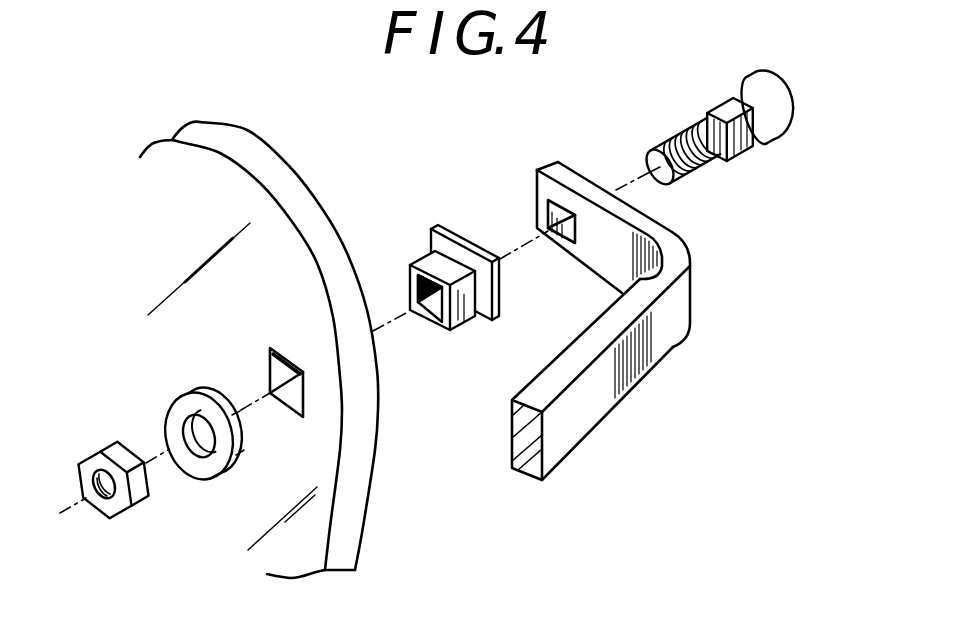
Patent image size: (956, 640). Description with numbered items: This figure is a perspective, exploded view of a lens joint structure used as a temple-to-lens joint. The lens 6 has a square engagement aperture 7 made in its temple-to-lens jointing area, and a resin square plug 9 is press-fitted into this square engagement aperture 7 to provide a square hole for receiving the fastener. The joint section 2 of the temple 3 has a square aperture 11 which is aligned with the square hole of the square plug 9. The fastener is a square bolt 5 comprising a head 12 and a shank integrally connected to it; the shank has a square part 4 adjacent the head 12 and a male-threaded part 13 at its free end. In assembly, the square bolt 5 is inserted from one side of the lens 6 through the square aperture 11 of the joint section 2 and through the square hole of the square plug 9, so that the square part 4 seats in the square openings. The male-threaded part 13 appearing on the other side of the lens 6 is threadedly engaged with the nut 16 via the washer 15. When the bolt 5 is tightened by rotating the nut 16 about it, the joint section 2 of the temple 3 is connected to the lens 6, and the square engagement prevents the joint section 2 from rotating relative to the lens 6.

The joint section 2 is at (601, 338).
The temple 3 is at (573, 440).
The square part 4 is at (755, 142).
The square bolt 5 is at (731, 135).
The lens 6 is at (285, 350).
The square engagement aperture 7 is at (298, 404).
The square plug 9 is at (463, 316).
The square aperture 11 is at (550, 231).
The head 12 is at (783, 140).
The male-threaded part 13 is at (697, 172).
The washer 15 is at (215, 470).
The nut 16 is at (138, 505).